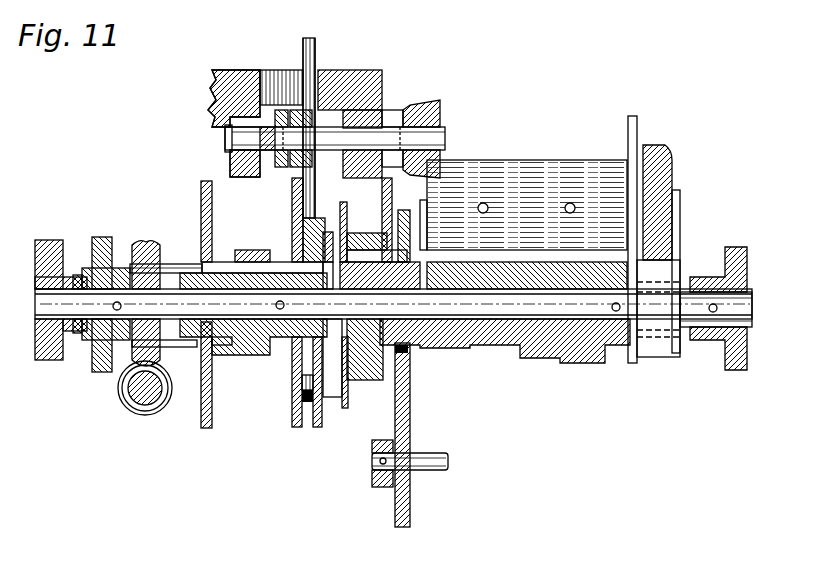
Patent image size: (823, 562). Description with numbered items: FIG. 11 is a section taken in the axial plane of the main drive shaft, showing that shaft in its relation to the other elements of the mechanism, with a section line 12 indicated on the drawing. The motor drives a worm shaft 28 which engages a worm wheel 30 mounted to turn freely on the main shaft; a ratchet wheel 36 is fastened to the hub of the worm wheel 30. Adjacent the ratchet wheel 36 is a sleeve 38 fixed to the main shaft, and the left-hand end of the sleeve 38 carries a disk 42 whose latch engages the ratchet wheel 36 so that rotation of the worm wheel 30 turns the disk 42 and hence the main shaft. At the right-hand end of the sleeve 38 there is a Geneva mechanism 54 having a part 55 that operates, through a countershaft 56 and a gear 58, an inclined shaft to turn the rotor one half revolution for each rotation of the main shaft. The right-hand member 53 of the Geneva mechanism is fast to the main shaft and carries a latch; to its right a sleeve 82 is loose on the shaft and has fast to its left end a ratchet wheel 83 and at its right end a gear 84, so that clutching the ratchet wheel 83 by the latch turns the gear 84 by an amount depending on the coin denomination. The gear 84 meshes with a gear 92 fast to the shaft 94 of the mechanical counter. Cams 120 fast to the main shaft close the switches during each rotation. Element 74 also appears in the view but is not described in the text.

The section line 12 is at (296, 18).
The worm shaft 28 is at (148, 406).
The worm wheel 30 is at (146, 242).
The ratchet wheel 36 is at (190, 358).
The sleeve 38 is at (282, 358).
The disk 42 is at (212, 222).
The right-hand member of the Geneva mechanism 53 is at (320, 427).
The Geneva mechanism 54 is at (290, 438).
The part of the Geneva mechanism 55 is at (296, 180).
The countershaft 56 is at (240, 135).
The gear 58 is at (437, 128).
The pin 74 is at (236, 346).
The sleeve 82 is at (366, 240).
The ratchet wheel 83 is at (348, 400).
The gear 84 is at (407, 394).
The gear 92 is at (410, 494).
The shaft of the mechanical counter 94 is at (440, 455).
The cams 120 is at (546, 376).